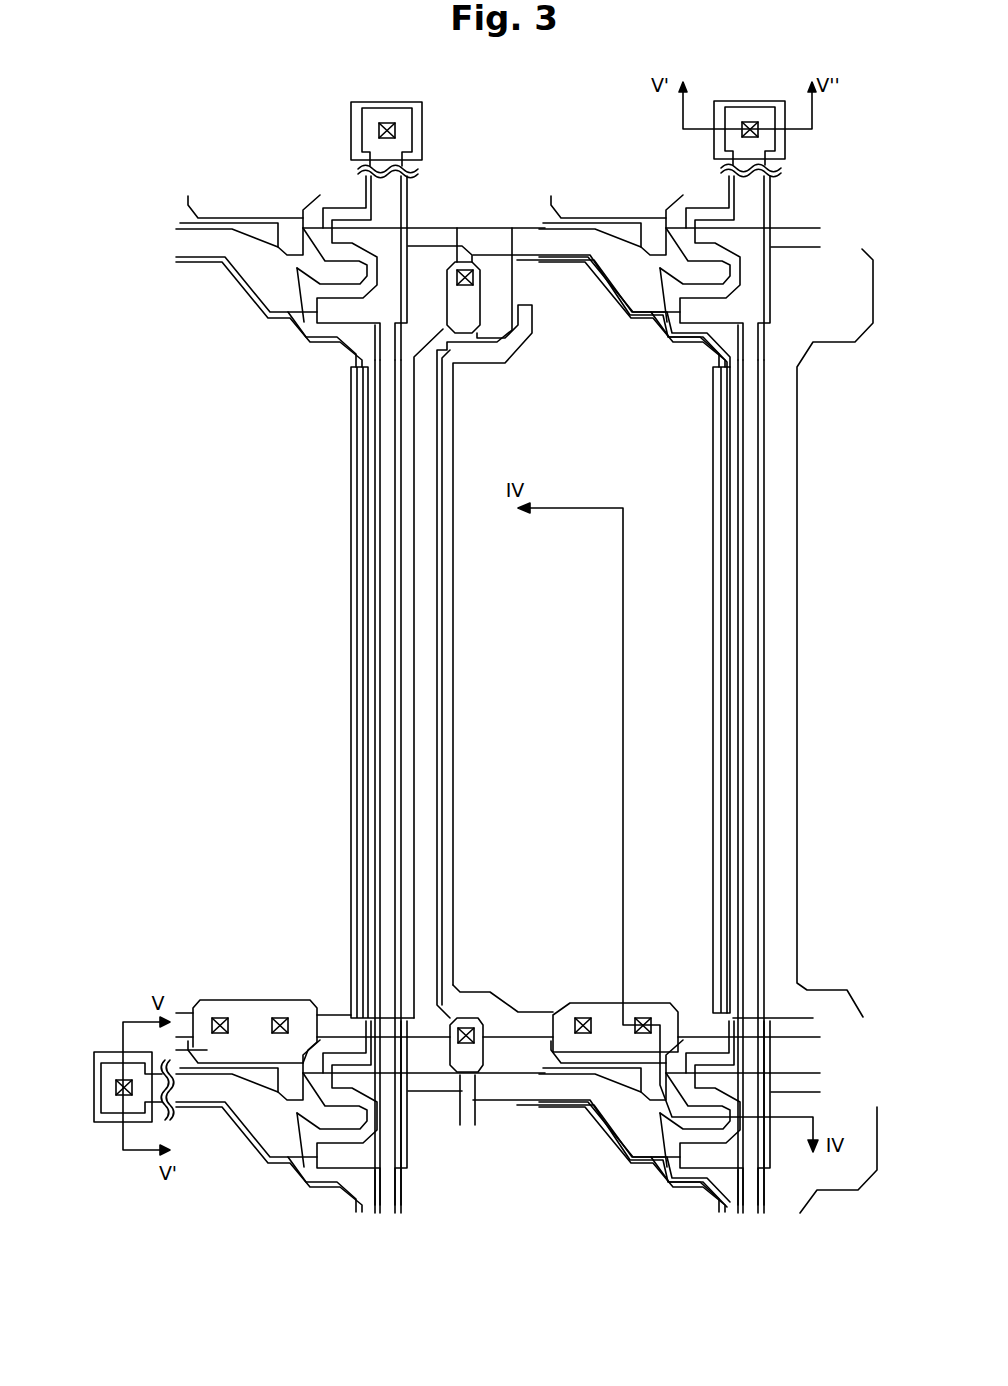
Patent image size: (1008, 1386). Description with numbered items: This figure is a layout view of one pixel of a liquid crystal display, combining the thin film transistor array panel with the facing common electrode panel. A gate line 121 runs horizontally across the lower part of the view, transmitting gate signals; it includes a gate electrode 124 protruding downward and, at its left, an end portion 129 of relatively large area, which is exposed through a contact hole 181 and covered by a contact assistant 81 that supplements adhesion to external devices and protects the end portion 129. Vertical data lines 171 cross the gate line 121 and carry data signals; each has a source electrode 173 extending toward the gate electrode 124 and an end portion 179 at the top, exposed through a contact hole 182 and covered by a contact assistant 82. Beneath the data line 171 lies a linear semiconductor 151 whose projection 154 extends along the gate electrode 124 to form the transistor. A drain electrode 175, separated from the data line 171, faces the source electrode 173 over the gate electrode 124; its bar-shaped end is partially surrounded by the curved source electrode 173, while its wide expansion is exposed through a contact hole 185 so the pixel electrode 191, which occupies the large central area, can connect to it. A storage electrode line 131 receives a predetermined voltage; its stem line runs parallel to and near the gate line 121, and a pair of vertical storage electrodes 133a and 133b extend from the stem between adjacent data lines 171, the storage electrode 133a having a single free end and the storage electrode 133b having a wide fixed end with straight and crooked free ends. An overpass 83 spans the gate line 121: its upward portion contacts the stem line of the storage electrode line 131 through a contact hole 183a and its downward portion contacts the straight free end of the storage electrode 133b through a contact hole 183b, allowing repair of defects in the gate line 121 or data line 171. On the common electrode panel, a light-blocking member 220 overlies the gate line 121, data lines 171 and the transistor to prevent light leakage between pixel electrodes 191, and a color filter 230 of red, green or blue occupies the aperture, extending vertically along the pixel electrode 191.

The contact assistant 82 is at (786, 155).
The end portion of data line 179 is at (722, 142).
The contact hole 182 is at (752, 122).
The overpass 83 is at (482, 295).
The contact hole 183b is at (473, 278).
The light-blocking member 220 is at (437, 417).
The storage electrode 133b is at (453, 432).
The storage electrode 133a is at (713, 432).
The pixel electrode 191 is at (727, 583).
The linear semiconductor 151 is at (760, 542).
The data line 171 is at (765, 515).
The color filter 230 is at (522, 572).
The drain electrode 175 is at (692, 1122).
The gate electrode 124 is at (692, 1122).
The projection 154 is at (654, 1122).
The source electrode 173 is at (705, 1180).
The gate line 121 is at (567, 1102).
The contact assistant 81 is at (97, 1124).
The contact hole 181 is at (116, 1087).
The end portion of gate line 129 is at (110, 1062).
The storage electrode line 131 is at (800, 1013).
The contact hole 183a is at (465, 1028).
The contact hole 185 is at (642, 1020).